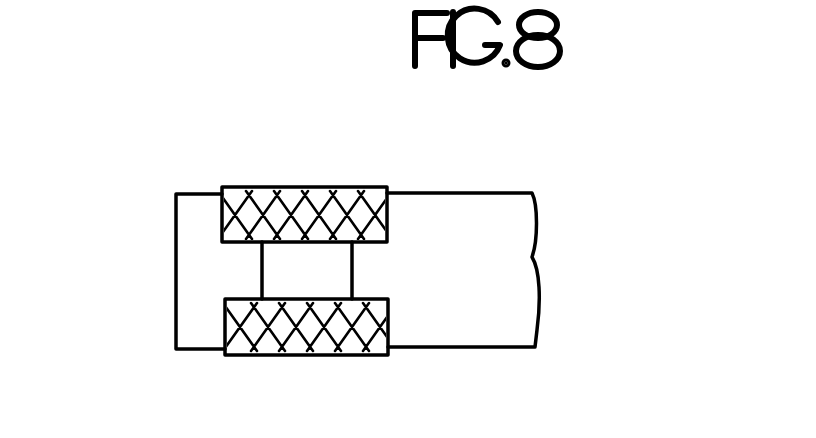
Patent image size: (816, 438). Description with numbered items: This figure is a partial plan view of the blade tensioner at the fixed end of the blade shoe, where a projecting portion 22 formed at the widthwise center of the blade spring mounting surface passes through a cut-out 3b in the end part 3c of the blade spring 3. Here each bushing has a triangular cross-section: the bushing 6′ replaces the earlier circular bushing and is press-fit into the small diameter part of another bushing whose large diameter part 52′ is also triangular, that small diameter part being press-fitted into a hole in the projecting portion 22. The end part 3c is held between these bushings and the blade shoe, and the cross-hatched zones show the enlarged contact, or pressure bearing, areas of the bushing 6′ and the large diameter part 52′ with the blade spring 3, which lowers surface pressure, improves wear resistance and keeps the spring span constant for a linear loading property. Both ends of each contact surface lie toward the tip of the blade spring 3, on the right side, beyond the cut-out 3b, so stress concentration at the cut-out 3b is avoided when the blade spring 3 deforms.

The blade spring 3 is at (512, 327).
The cut-out 3b is at (352, 276).
The end part 3c is at (192, 307).
The bushing 6′ is at (273, 355).
The projecting portion 22 is at (297, 258).
The large diameter part 52′ is at (370, 187).